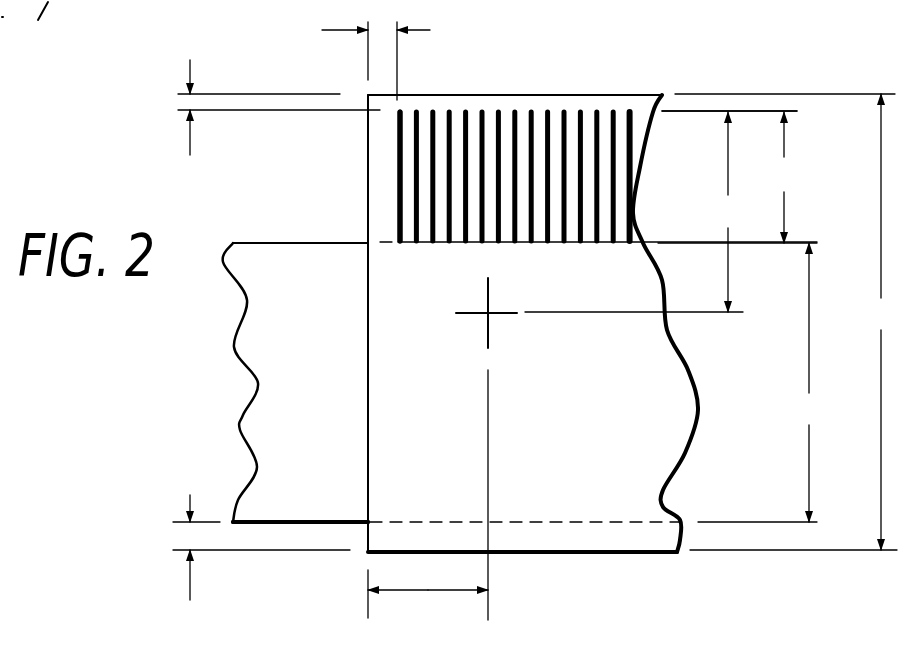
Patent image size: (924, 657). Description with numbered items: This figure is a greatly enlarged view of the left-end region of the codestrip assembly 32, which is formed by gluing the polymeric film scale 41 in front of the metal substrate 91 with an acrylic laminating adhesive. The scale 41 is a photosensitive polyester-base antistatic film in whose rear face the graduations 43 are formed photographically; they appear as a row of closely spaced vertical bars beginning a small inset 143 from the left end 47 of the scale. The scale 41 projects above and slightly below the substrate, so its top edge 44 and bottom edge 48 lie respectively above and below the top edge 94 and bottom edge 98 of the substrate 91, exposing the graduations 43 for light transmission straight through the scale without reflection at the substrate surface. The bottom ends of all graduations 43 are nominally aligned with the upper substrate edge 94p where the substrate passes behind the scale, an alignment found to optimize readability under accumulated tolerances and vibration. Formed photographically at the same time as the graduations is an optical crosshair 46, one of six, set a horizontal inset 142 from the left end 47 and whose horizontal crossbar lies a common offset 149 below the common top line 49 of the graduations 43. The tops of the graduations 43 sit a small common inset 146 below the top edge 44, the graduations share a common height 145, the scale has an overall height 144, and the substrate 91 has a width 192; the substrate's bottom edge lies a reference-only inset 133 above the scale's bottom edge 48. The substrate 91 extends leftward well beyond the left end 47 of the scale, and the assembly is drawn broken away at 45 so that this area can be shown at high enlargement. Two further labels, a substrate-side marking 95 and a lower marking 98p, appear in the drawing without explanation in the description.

The codestrip assembly 32 is at (340, 177).
The polymeric film scale 41 is at (449, 103).
The graduations 43 is at (576, 117).
The top edge of the scale 44 is at (597, 95).
The break-away location 45 is at (690, 370).
The optical crosshair 46 is at (500, 322).
The left end of the scale 47 is at (368, 152).
The bottom edge of the scale 48 is at (518, 552).
The common top line of the graduations 49 is at (697, 110).
The metal substrate 91 is at (255, 335).
The top edge of the substrate 94 is at (295, 243).
The upper edge of the substrate behind the scale 94p is at (518, 243).
The left edge of mounting plate 95 is at (257, 378).
The bottom edge of the substrate 98 is at (298, 522).
The bottom reference line 98p is at (625, 522).
The inset of substrate bottom edge 133 is at (261, 534).
The inset of first crosshair 142 is at (428, 598).
The inset of first graduation 143 is at (353, 59).
The height of the scale 144 is at (791, 322).
The common height of graduations 145 is at (736, 177).
The common inset of graduation tops 146 is at (277, 91).
The common offset of crosshair crossbars 149 is at (639, 212).
The width of the substrate 192 is at (745, 382).